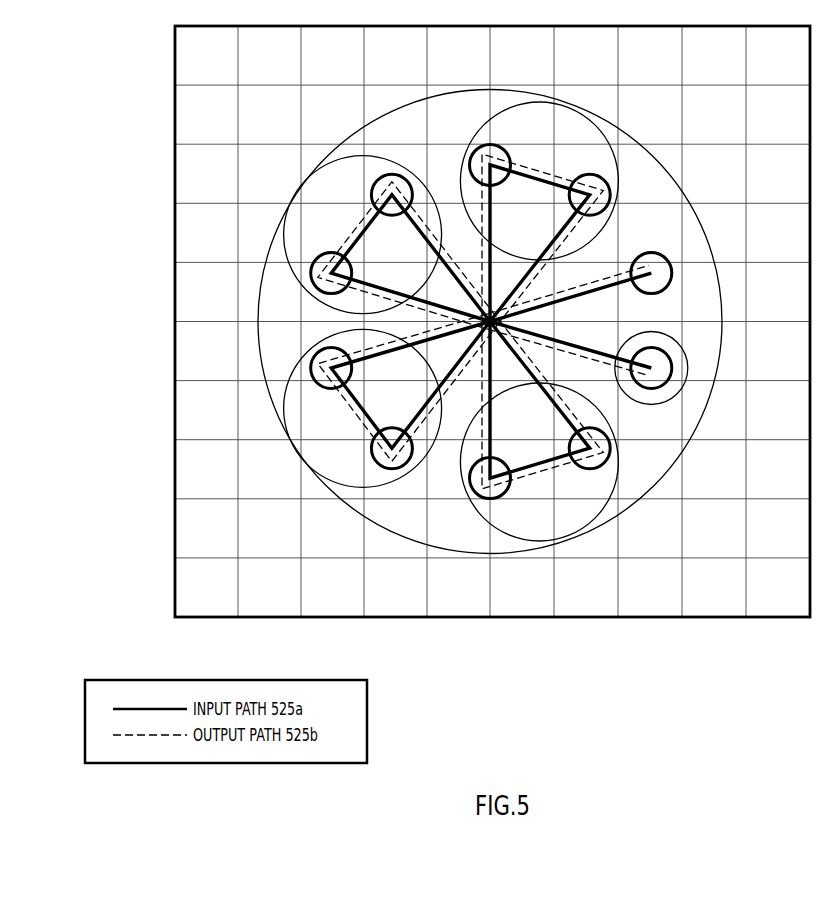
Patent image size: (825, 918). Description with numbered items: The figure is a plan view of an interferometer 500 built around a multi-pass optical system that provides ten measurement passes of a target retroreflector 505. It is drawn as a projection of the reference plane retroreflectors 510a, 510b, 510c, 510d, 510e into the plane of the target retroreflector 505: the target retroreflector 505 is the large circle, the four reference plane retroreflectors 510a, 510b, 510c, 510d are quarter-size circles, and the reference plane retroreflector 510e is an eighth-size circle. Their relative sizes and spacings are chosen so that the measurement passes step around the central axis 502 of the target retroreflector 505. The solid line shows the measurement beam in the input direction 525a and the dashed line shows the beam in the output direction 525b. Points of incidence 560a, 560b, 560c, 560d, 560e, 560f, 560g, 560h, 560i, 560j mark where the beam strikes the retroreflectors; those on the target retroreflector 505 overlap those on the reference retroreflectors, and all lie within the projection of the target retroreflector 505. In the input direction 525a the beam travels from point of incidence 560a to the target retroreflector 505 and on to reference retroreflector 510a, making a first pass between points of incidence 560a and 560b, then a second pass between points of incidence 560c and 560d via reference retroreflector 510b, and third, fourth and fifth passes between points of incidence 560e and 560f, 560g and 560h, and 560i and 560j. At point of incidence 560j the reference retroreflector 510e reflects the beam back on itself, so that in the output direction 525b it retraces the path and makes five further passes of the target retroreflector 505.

The interferometer 500 is at (80, 45).
The target retroreflector 505 is at (712, 251).
The central axis 502 is at (486, 325).
The reference plane retroreflector 510a is at (286, 415).
The reference plane retroreflector 510b is at (594, 128).
The reference plane retroreflector 510c is at (477, 503).
The reference plane retroreflector 510d is at (335, 162).
The reference plane retroreflector 510e is at (687, 372).
The input direction 525a is at (573, 298).
The output direction 525b is at (479, 321).
The point of incidence 560a is at (650, 252).
The point of incidence 560b is at (330, 387).
The point of incidence 560c is at (389, 468).
The point of incidence 560d is at (610, 186).
The point of incidence 560e is at (470, 160).
The point of incidence 560f is at (506, 457).
The point of incidence 560g is at (612, 453).
The point of incidence 560h is at (401, 174).
The point of incidence 560i is at (310, 272).
The point of incidence 560j is at (650, 388).